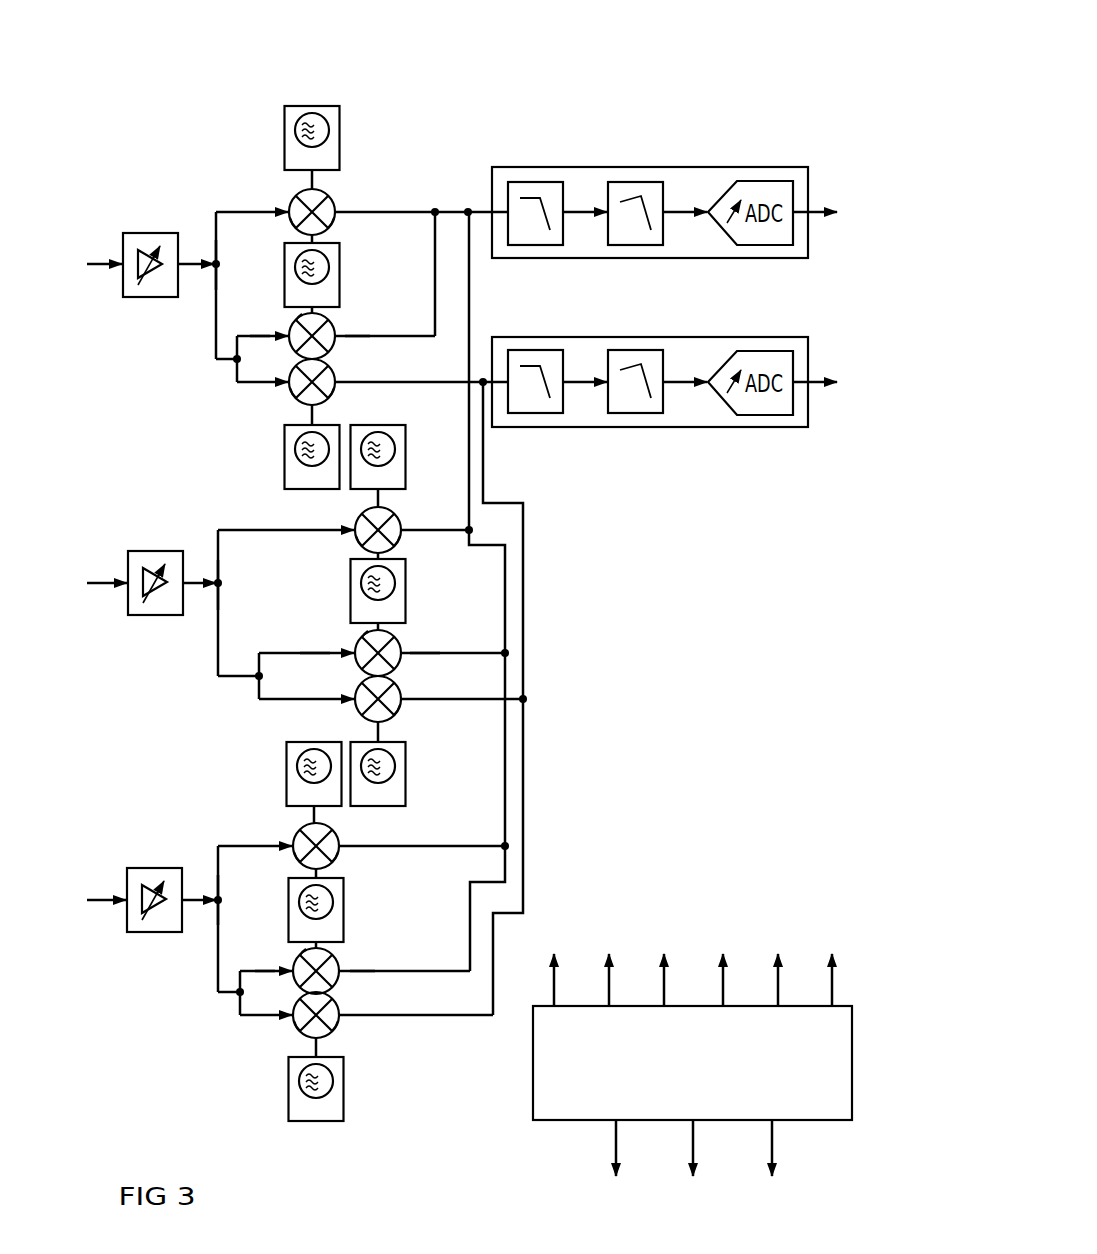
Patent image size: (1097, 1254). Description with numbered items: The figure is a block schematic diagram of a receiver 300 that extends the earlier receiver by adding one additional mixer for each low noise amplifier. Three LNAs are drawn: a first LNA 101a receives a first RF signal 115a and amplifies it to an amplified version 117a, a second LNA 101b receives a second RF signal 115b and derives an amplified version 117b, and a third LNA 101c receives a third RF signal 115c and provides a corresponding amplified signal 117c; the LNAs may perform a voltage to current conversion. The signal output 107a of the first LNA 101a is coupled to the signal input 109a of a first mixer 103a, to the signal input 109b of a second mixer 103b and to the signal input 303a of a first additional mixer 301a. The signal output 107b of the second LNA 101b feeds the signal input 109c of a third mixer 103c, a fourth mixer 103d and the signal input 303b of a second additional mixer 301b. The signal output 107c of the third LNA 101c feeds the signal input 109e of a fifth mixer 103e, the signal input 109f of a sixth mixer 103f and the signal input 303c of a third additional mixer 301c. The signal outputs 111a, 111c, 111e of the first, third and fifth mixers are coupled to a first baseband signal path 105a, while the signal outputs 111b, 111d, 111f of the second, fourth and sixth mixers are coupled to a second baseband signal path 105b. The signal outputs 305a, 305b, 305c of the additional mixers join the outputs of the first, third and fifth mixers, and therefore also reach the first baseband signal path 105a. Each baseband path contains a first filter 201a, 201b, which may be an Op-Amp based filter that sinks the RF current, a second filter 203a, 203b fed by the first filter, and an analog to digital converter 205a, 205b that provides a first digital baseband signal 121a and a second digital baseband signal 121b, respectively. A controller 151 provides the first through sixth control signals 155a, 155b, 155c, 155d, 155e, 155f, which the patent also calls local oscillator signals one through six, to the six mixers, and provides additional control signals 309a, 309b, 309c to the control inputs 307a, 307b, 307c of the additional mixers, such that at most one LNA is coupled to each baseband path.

The receiver 300 is at (466, 632).
The first low noise amplifier 101a is at (151, 232).
The second low noise amplifier 101b is at (151, 550).
The third low noise amplifier 101c is at (152, 867).
The first mixer 103a is at (331, 196).
The second mixer 103b is at (336, 368).
The third mixer 103c is at (397, 513).
The fourth mixer 103d is at (402, 686).
The fifth mixer 103e is at (335, 831).
The sixth mixer 103f is at (340, 1001).
The first baseband signal path 105a is at (700, 167).
The second baseband signal path 105b is at (705, 428).
The signal output of the first LNA 107a is at (180, 299).
The signal output of the second LNA 107b is at (185, 617).
The signal output of the third LNA 107c is at (184, 934).
The signal input of the first mixer 109a is at (297, 228).
The signal input of the second mixer 109b is at (297, 394).
The signal input of the third mixer 109c is at (362, 546).
The signal input of the fifth mixer 109e is at (302, 862).
The signal input of the sixth mixer 109f is at (298, 1033).
The signal output of the first mixer 111a is at (327, 228).
The signal output of the second mixer 111b is at (330, 392).
The signal output of the third mixer 111c is at (394, 546).
The signal output of the fourth mixer 111d is at (396, 709).
The signal output of the fifth mixer 111e is at (331, 862).
The signal output of the sixth mixer 111f is at (338, 1028).
The first RF signal 115a is at (91, 262).
The second RF signal 115b is at (91, 582).
The third RF signal 115c is at (91, 899).
The amplified version of the first RF signal 117a is at (193, 268).
The amplified version of the second RF signal 117b is at (195, 587).
The signal split node 117c is at (195, 903).
The first digital baseband signal 121a is at (813, 205).
The second digital baseband signal 121b is at (813, 392).
The controller 151 is at (533, 1067).
The first control signal 155a is at (311, 182).
The second control signal 155b is at (311, 414).
The third control signal 155c is at (378, 497).
The fourth control signal 155d is at (380, 732).
The fifth control signal 155e is at (314, 815).
The sixth control signal 155f is at (320, 1047).
The first filter of the first baseband signal path 201a is at (537, 181).
The first filter of the second baseband signal path 201b is at (538, 413).
The second filter of the first baseband signal path 203a is at (637, 181).
The second filter of the second baseband signal path 203b is at (638, 413).
The analog to digital converter of the first baseband signal path 205a is at (755, 181).
The analog to digital converter of the second baseband signal path 205b is at (760, 413).
The first additional mixer 301a is at (336, 345).
The second additional mixer 301b is at (402, 661).
The third additional mixer 301c is at (340, 981).
The signal input of the first additional mixer 303a is at (289, 333).
The signal input of the second additional mixer 303b is at (355, 651).
The signal input of the third additional mixer 303c is at (293, 969).
The signal output of the first additional mixer 305a is at (338, 336).
The signal output of the second additional mixer 305b is at (404, 653).
The signal output of the third additional mixer 305c is at (341, 970).
The control input of the first additional mixer 307a is at (297, 318).
The control input of the second additional mixer 307b is at (362, 636).
The control input of the third additional mixer 307c is at (301, 953).
The first additional control signal 309a is at (327, 318).
The second additional control signal 309b is at (394, 636).
The third additional control signal 309c is at (332, 953).